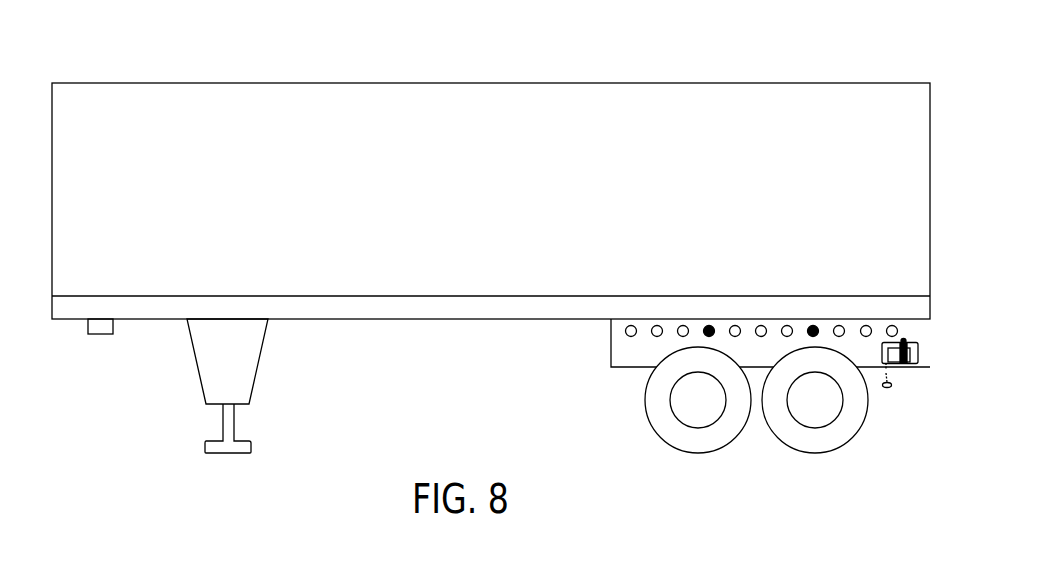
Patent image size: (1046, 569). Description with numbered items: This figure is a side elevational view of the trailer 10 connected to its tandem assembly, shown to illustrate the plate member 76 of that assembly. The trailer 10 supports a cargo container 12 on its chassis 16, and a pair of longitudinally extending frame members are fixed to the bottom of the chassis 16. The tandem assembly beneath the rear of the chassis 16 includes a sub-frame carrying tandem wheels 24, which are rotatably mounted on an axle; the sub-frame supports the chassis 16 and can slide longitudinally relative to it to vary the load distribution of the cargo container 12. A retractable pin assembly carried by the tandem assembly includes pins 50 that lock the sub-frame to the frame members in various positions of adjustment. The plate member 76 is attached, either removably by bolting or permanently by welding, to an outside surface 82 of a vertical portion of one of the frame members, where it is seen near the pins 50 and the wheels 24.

The trailer 10 is at (491, 256).
The cargo container 12 is at (627, 98).
The chassis 16 is at (625, 357).
The tandem wheels 24 is at (693, 403).
The pins 50 is at (815, 324).
The plate member 76 is at (915, 365).
The outside surface 82 is at (912, 330).